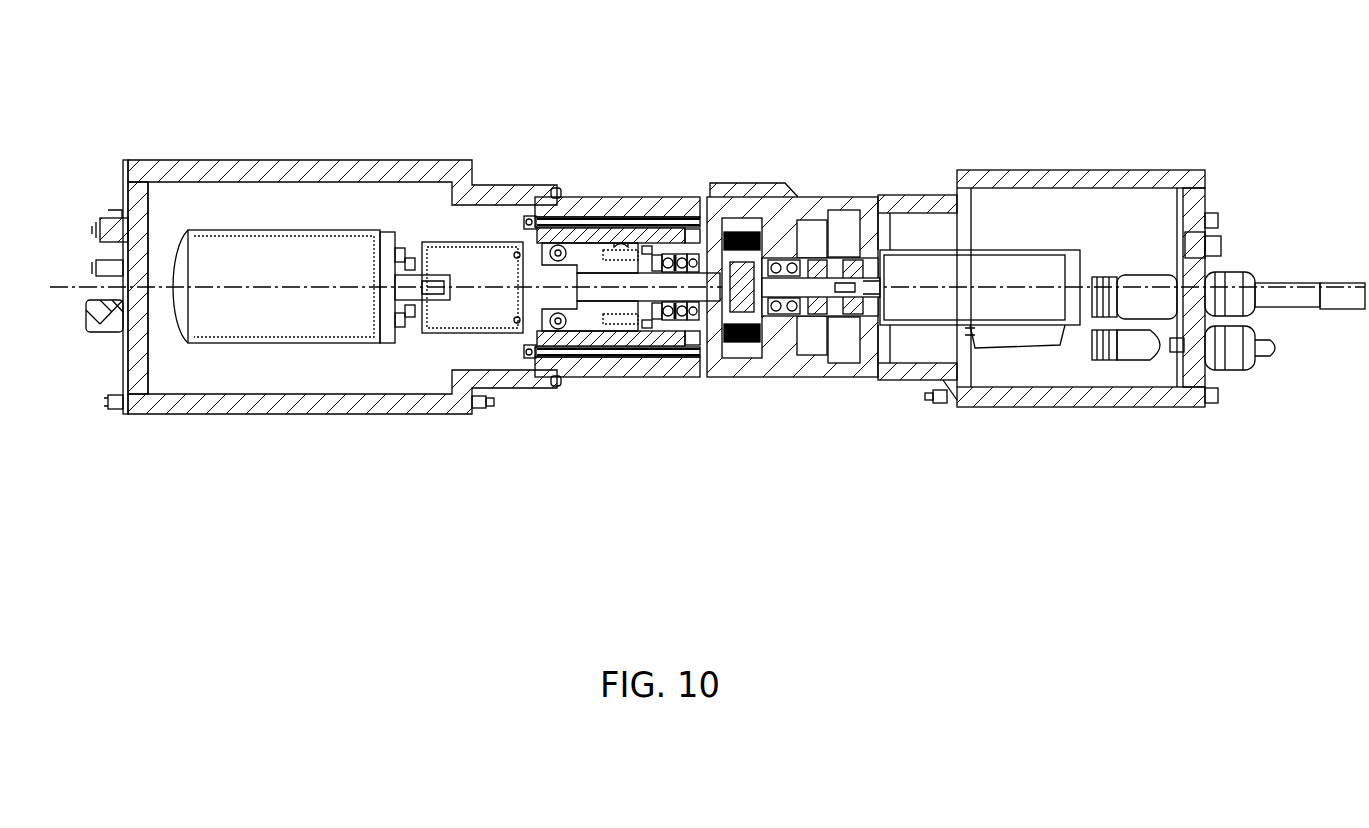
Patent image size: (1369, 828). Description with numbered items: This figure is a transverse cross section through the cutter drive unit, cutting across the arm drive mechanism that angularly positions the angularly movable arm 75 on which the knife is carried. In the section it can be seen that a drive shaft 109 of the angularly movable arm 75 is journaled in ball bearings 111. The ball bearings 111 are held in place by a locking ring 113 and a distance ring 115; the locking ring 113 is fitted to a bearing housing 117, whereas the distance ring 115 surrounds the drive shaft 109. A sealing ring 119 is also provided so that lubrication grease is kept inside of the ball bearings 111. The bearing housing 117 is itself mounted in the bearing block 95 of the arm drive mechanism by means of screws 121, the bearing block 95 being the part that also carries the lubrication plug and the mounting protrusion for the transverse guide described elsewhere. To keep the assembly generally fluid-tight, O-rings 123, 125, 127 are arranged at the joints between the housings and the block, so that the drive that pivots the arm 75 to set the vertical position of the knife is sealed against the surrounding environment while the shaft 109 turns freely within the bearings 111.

The O-ring 123 is at (134, 165).
The O-ring 127 is at (553, 200).
The sealing ring 119 is at (651, 260).
The locking ring 113 is at (659, 258).
The ball bearings 111 is at (689, 260).
The angularly movable arm 75 is at (762, 182).
The screws 121 is at (530, 352).
The bearing block 95 is at (582, 370).
The drive shaft 109 is at (625, 300).
The distance ring 115 is at (653, 320).
The O-ring 125 is at (686, 343).
The bearing housing 117 is at (697, 343).